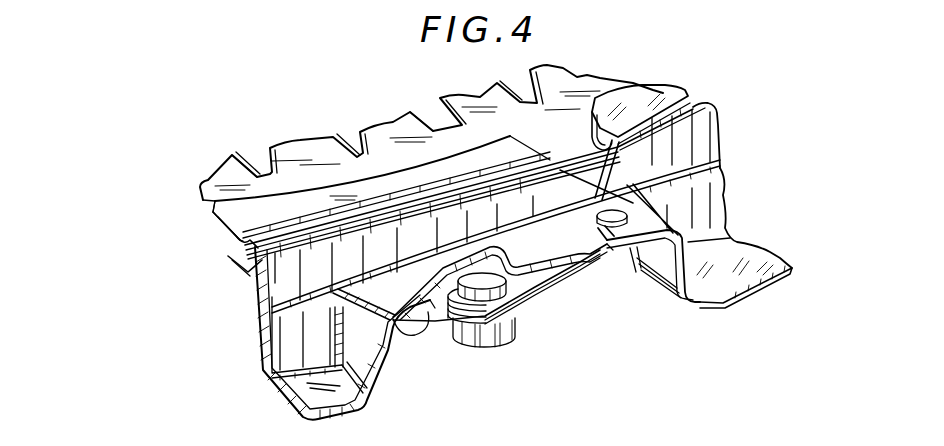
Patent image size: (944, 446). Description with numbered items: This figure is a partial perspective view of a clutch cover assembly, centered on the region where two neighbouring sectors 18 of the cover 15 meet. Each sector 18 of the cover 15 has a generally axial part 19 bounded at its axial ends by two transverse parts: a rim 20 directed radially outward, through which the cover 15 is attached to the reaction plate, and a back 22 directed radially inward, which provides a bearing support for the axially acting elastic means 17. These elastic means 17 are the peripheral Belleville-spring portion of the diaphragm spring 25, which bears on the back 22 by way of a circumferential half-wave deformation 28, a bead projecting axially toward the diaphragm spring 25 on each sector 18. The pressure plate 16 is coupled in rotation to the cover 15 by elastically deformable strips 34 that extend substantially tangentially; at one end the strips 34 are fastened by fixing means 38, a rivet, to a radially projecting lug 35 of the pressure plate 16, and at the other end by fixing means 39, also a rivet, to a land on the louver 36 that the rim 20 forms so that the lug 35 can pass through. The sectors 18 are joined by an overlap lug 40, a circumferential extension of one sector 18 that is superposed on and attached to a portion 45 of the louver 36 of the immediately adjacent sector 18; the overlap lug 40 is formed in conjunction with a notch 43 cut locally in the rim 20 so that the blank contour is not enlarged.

The cover 15 is at (727, 105).
The pressure plate 16 is at (440, 348).
The axially acting elastic means 17 is at (566, 130).
The sector 18 is at (212, 232).
The axial part 19 is at (692, 179).
The rim 20 is at (278, 397).
The back 22 is at (302, 215).
The diaphragm spring 25 is at (591, 72).
The circumferential half-wave deformation 28 is at (245, 262).
The elastically deformable strip 34 is at (532, 290).
The lug 35 is at (470, 352).
The louver 36 is at (423, 337).
The fixing means 38 is at (472, 280).
The fixing means 39 is at (597, 212).
The overlap lug 40 is at (634, 255).
The notch 43 is at (706, 300).
The portion of the louver 45 is at (616, 254).